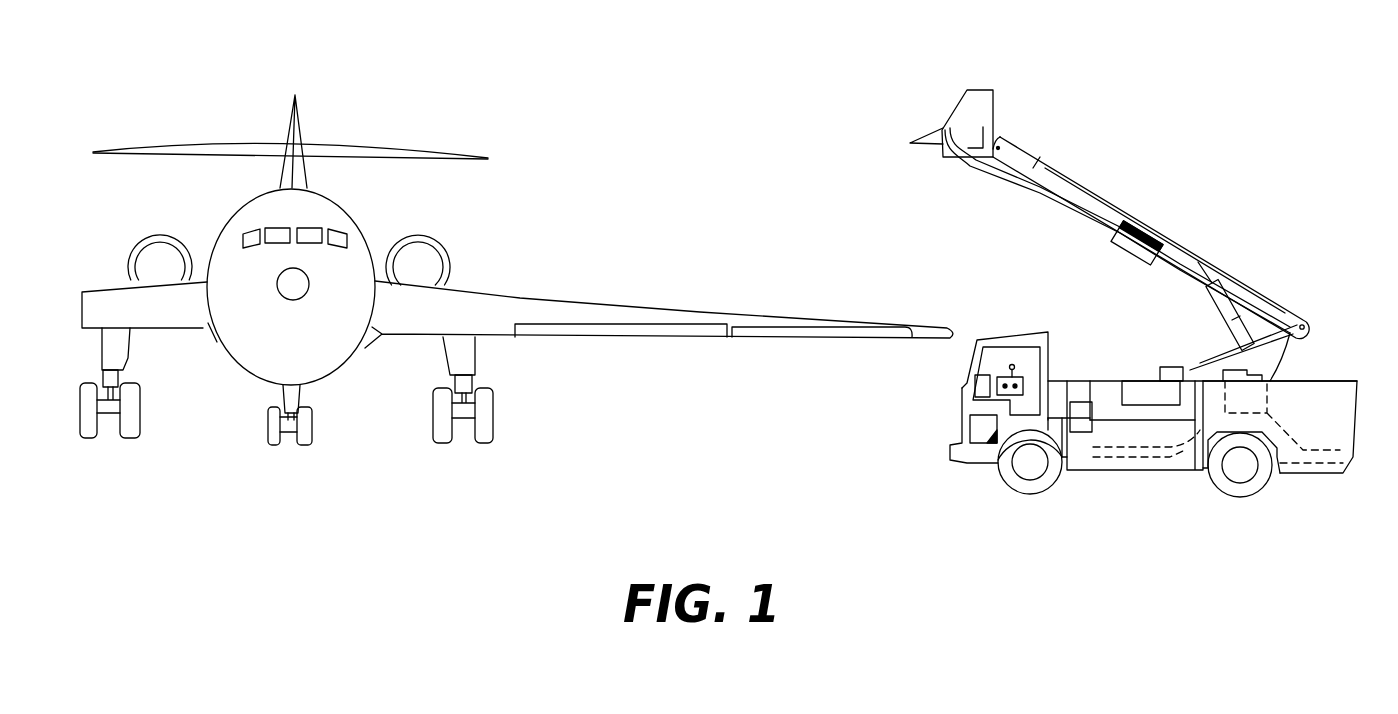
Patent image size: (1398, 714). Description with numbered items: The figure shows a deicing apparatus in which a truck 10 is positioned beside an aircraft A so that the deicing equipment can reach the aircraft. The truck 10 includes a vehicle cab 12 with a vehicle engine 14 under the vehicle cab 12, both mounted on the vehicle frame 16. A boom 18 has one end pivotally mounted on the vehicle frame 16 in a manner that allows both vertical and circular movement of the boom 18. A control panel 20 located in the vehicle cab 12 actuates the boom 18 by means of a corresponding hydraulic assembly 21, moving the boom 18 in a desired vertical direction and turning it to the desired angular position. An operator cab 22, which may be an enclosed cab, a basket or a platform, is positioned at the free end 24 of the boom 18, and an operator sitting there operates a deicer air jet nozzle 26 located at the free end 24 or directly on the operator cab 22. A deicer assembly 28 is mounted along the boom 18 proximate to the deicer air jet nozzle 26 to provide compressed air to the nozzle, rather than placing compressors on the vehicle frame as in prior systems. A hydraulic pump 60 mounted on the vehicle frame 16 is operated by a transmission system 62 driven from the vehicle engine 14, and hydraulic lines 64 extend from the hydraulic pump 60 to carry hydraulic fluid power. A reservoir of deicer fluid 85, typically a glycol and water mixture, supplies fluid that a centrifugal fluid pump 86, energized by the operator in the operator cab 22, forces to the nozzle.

The aircraft A is at (570, 292).
The truck 10 is at (1123, 282).
The vehicle cab 12 is at (992, 368).
The vehicle engine 14 is at (970, 430).
The vehicle frame 16 is at (1143, 470).
The boom 18 is at (1113, 200).
The control panel 20 is at (1025, 378).
The hydraulic assembly 21 is at (1270, 413).
The operator cab 22 is at (978, 89).
The free end 24 is at (1000, 100).
The deicer air jet nozzle 26 is at (920, 130).
The deicer assembly 28 is at (1123, 253).
The hydraulic pump 60 is at (1083, 425).
The transmission system 62 is at (1057, 458).
The hydraulic lines 64 is at (1110, 420).
The reservoir of deicer fluid 85 is at (1133, 378).
The centrifugal fluid pump 86 is at (1297, 338).